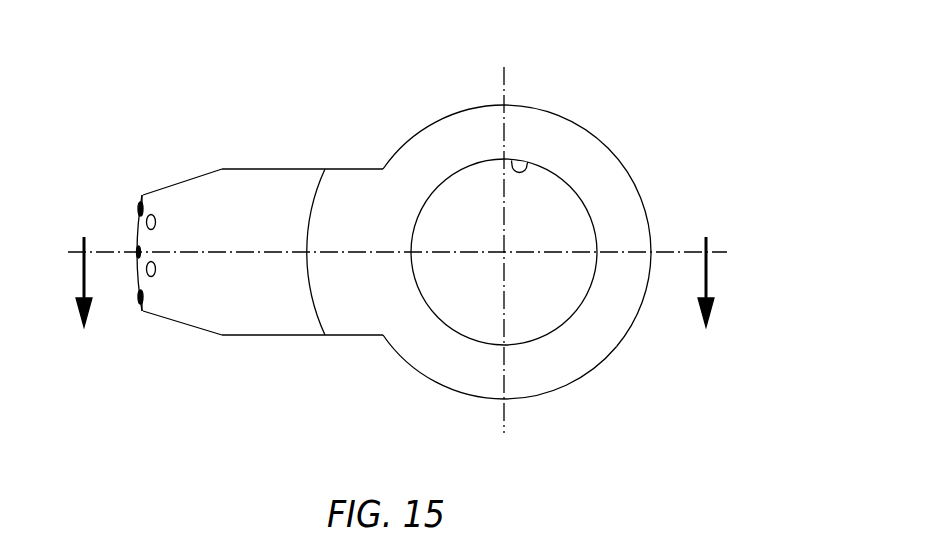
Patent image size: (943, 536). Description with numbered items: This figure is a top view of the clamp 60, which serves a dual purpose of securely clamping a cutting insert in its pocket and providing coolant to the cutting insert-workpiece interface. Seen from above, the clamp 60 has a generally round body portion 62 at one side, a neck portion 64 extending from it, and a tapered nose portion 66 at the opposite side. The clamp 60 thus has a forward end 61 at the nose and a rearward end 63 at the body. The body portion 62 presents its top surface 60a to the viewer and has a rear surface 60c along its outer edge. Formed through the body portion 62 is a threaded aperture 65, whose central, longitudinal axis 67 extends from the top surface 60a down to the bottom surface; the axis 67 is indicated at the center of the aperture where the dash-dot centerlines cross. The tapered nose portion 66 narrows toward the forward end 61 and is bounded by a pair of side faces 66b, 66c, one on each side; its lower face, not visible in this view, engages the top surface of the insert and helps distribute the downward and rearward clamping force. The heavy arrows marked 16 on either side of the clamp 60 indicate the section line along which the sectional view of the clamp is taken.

The section line 16- 16 is at (397, 264).
The clamp 60 is at (610, 63).
The top surface 60a is at (446, 147).
The rear surface 60c is at (645, 298).
The forward end 61 is at (109, 322).
The body portion 62 is at (410, 380).
The rearward end 63 is at (588, 385).
The neck portion 64 is at (284, 112).
The threaded aperture 65 is at (528, 164).
The tapered nose portion 66 is at (187, 175).
The side face 66b is at (158, 187).
The side face 66c is at (188, 326).
The central, longitudinal axis 67 is at (504, 252).